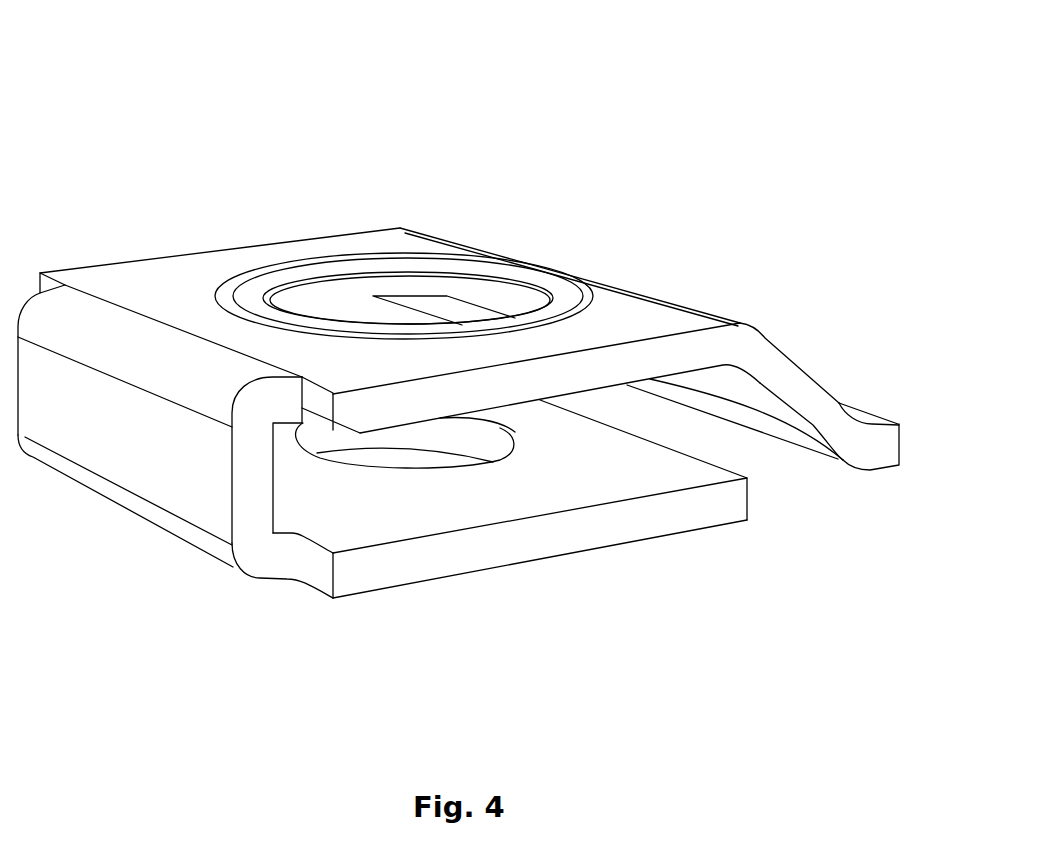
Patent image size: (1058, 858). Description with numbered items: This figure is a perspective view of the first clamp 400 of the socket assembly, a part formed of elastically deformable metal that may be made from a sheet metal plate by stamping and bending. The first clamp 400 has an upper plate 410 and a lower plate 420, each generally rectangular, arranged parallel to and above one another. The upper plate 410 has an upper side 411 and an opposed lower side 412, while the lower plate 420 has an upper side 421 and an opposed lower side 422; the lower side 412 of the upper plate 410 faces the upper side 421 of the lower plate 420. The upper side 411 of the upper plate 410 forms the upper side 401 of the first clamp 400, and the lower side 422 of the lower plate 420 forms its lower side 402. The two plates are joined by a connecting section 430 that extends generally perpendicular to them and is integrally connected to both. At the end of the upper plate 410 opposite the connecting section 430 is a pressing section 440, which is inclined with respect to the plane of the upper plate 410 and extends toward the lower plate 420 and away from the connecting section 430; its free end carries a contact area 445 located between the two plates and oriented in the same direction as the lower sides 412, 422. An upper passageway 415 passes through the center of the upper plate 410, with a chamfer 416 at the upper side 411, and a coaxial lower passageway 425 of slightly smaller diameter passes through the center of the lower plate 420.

The first clamp 400 is at (120, 50).
The upper side of the first clamp 401 is at (186, 263).
The lower side of the first clamp 402 is at (376, 592).
The upper plate 410 is at (620, 363).
The upper side of the upper plate 411 is at (673, 315).
The lower side of the upper plate 412 is at (593, 396).
The upper passageway 415 is at (388, 316).
The chamfer 416 is at (312, 278).
The lower plate 420 is at (573, 535).
The upper side of the lower plate 421 is at (697, 477).
The lower side of the lower plate 422 is at (647, 540).
The lower passageway 425 is at (432, 465).
The connecting section 430 is at (249, 495).
The pressing section 440 is at (803, 393).
The contact area 445 is at (893, 468).